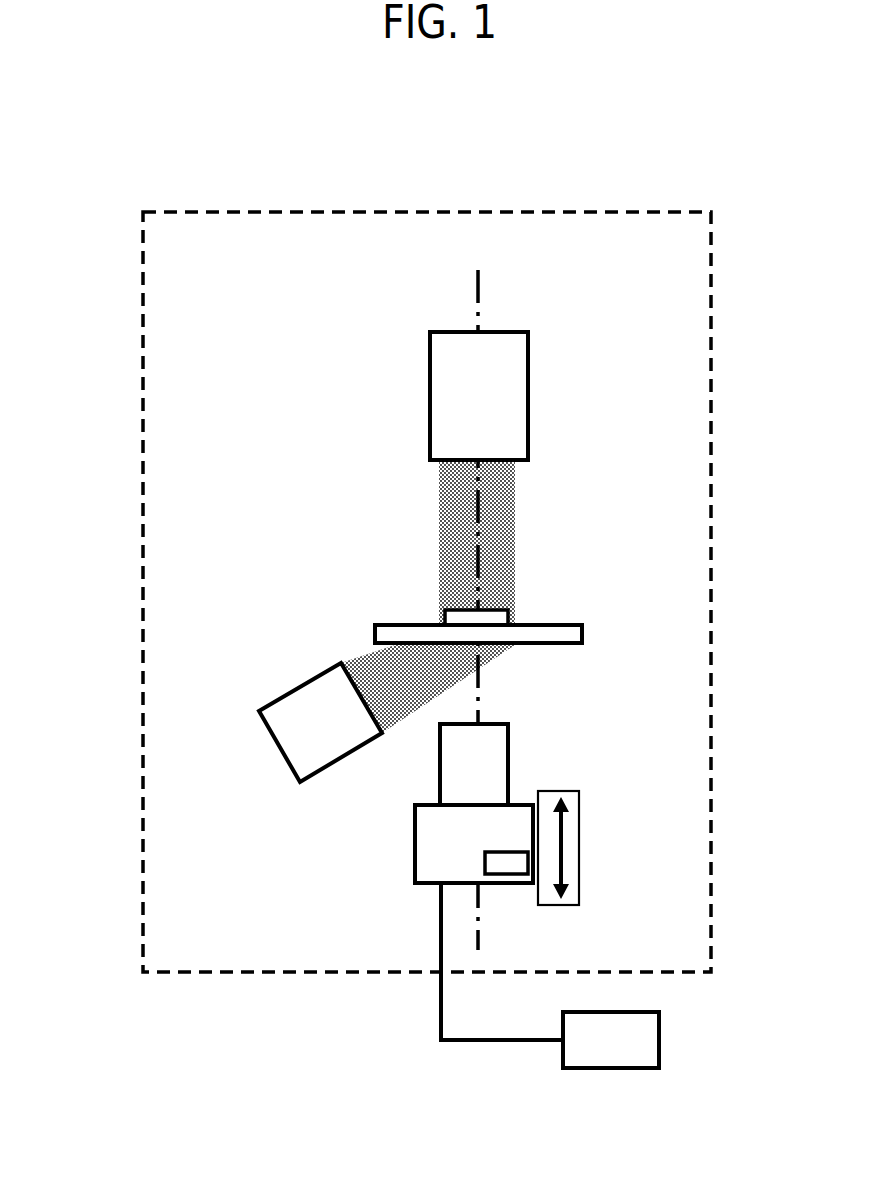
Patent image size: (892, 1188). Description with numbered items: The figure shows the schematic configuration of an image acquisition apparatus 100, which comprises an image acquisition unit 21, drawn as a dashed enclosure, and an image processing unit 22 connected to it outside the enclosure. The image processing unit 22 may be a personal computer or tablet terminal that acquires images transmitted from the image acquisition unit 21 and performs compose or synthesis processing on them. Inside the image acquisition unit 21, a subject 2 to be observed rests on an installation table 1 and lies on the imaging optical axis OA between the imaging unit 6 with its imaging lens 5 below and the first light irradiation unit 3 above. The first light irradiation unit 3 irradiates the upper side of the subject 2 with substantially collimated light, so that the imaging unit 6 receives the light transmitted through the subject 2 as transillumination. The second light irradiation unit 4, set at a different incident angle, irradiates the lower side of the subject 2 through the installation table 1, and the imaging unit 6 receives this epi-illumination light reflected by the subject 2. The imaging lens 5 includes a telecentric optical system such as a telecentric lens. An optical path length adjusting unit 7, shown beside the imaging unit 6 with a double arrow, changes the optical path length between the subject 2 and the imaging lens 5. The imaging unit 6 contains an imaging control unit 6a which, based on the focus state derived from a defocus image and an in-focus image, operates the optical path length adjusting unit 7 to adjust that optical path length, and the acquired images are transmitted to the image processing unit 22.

The image acquisition apparatus 100 is at (94, 138).
The installation table 1 is at (374, 632).
The subject 2 is at (508, 610).
The first light irradiation unit 3 is at (528, 382).
The second light irradiation unit 4 is at (270, 740).
The imaging lens 5 is at (441, 773).
The imaging unit 6 is at (413, 870).
The imaging control unit 6a is at (515, 863).
The optical path length adjusting unit 7 is at (580, 845).
The image acquisition unit 21 is at (712, 432).
The image processing unit 22 is at (660, 1045).
The imaging optical axis OA is at (480, 290).